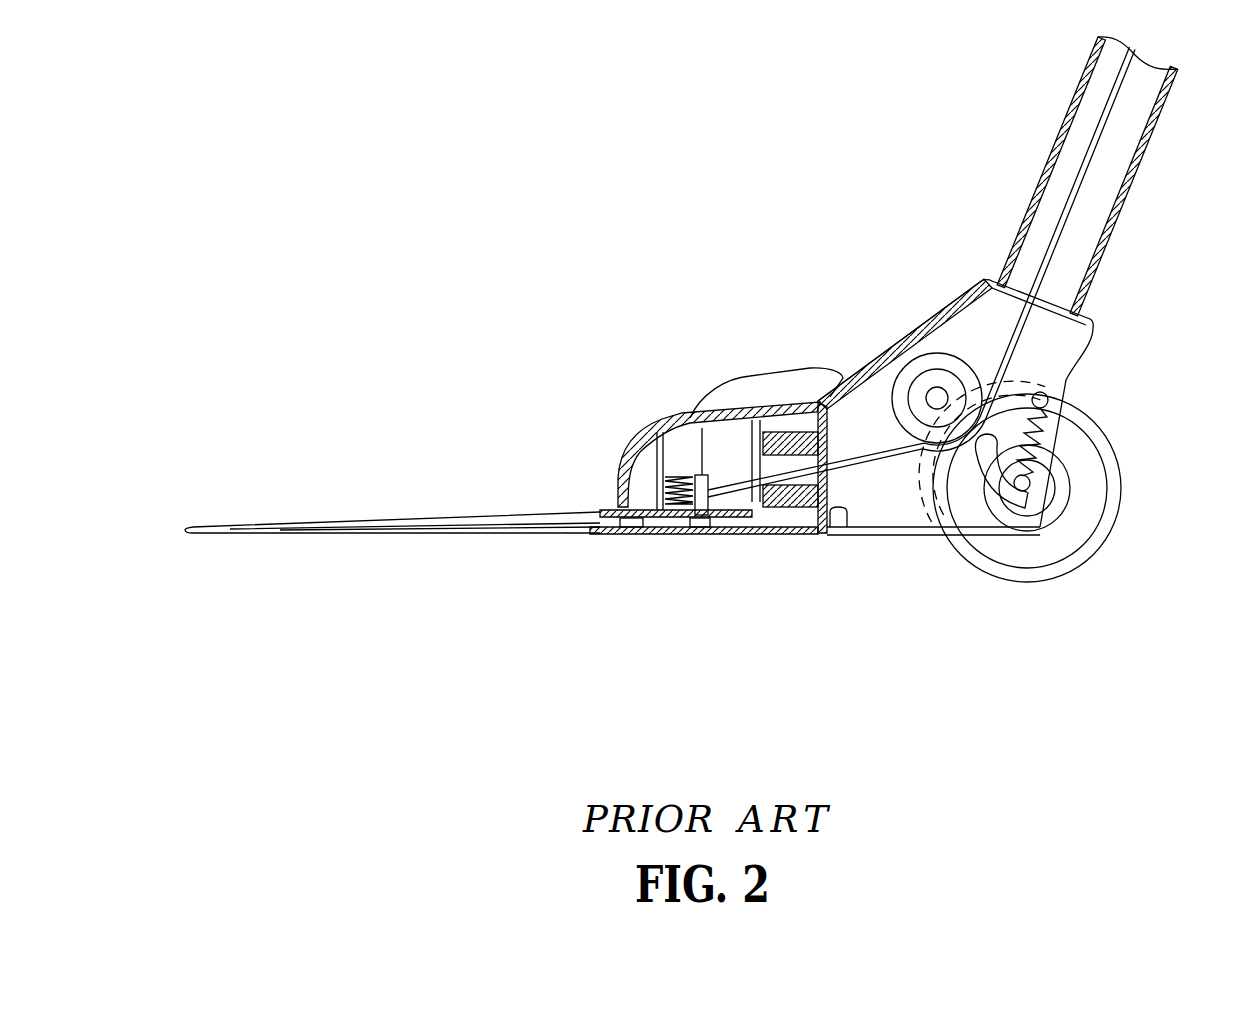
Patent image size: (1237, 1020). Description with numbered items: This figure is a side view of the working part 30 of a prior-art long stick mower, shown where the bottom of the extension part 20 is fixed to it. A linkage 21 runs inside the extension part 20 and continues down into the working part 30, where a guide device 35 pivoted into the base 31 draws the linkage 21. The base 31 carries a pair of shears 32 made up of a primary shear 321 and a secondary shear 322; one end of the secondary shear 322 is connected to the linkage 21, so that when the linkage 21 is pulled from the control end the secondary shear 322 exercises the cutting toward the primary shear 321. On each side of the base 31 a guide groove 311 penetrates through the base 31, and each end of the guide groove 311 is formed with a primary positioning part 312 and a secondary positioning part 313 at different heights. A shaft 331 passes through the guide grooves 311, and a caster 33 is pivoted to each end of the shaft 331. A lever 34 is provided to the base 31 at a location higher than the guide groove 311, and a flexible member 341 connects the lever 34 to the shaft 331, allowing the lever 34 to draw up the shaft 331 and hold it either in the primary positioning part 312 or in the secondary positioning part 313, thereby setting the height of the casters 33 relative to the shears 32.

The extension part 20 is at (1127, 197).
The linkage 21 is at (1048, 222).
The working part 30 is at (708, 385).
The base 31 is at (960, 292).
The guide groove 311 is at (990, 505).
The primary positioning part 312 is at (1025, 500).
The secondary positioning part 313 is at (976, 468).
The pair of shears 32 is at (345, 465).
The primary shear 321 is at (500, 534).
The secondary shear 322 is at (537, 512).
The caster 33 is at (1115, 450).
The shaft 331 is at (1030, 484).
The lever 34 is at (1048, 392).
The flexible member 341 is at (1053, 404).
The guide device 35 is at (913, 390).